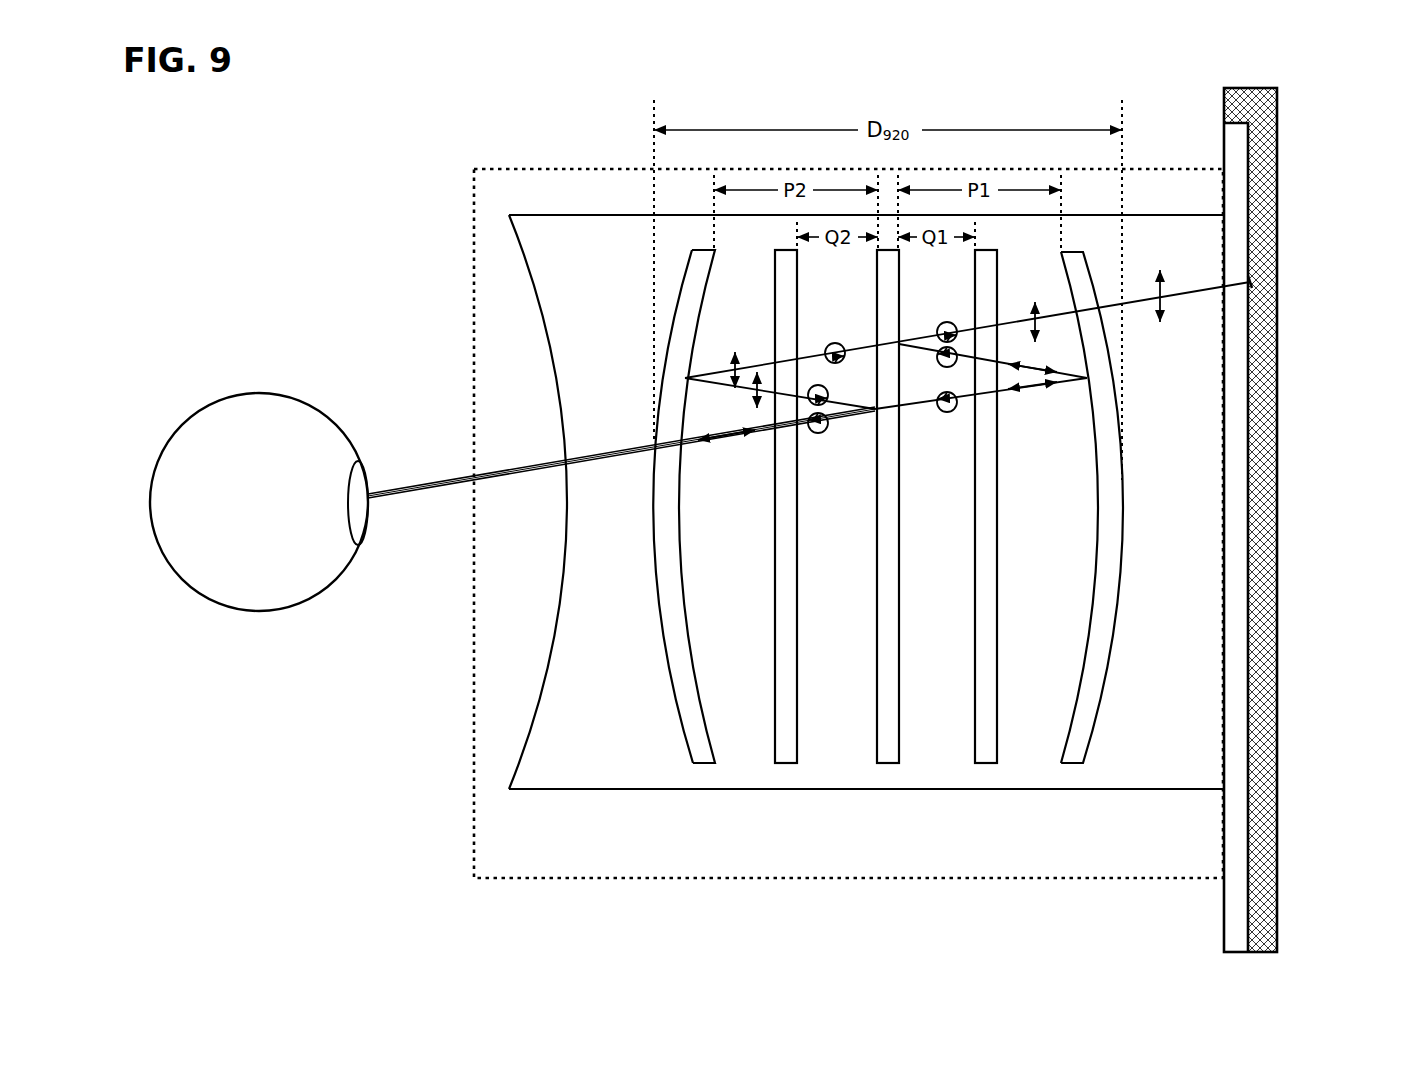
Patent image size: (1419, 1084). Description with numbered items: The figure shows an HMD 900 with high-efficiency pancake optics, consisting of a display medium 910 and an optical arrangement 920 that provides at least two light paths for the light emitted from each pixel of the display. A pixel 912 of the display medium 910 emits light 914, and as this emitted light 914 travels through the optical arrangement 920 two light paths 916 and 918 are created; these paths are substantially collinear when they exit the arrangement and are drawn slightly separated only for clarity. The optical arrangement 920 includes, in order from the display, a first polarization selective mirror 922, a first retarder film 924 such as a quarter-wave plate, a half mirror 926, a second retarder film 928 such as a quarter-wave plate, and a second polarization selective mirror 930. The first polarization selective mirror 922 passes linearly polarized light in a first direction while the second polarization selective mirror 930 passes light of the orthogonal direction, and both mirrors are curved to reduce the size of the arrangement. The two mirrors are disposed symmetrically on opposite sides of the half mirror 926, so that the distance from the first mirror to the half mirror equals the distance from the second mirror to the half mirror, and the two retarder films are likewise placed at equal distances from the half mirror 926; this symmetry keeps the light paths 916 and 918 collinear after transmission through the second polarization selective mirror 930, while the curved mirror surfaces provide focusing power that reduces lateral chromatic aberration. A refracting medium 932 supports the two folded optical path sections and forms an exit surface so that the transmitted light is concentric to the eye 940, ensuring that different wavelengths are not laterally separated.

The HMD 900 is at (1302, 513).
The display medium 910 is at (1278, 513).
The pixel 912 is at (1252, 283).
The emitted light 914 is at (1200, 292).
The light path 916 is at (434, 486).
The light path 918 is at (433, 492).
The optical arrangement 920 is at (474, 200).
The first polarization selective mirror 922 is at (1070, 765).
The first retarder film 924 is at (990, 765).
The half mirror 926 is at (893, 765).
The second retarder film 928 is at (787, 765).
The second polarization selective mirror 930 is at (712, 765).
The refracting medium 932 is at (593, 790).
The eye 940 is at (258, 612).